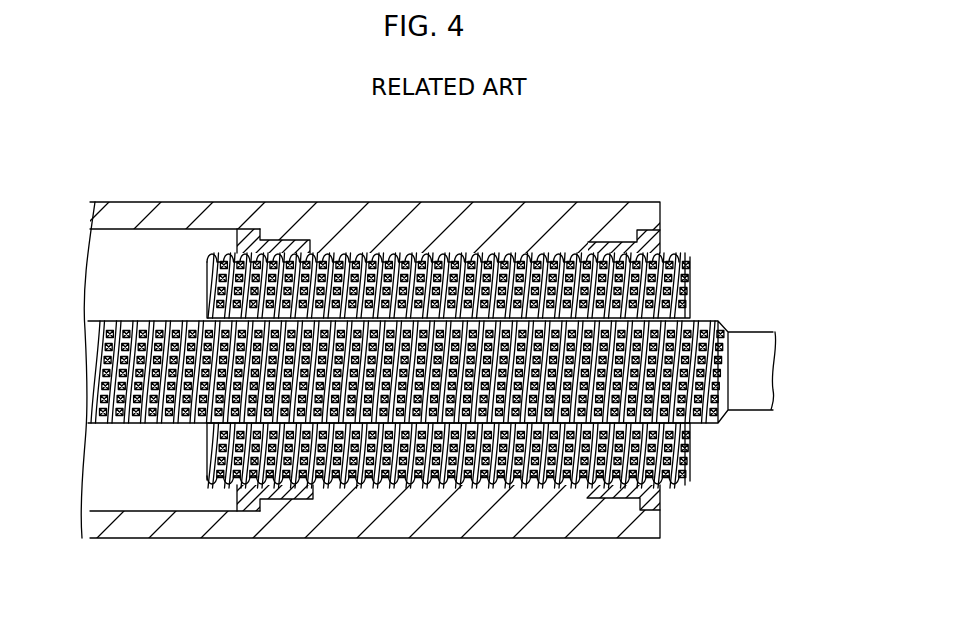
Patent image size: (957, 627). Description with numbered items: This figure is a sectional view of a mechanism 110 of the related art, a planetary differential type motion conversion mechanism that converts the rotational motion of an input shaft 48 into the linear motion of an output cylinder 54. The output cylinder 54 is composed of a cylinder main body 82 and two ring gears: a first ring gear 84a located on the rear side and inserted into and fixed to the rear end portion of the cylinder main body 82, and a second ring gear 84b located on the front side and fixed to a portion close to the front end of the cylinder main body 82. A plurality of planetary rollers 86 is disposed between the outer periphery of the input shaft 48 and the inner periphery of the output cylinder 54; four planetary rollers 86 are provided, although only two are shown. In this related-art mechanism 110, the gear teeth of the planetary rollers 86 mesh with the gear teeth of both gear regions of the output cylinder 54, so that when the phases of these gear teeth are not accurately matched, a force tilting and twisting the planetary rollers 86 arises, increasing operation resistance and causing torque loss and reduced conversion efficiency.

The mechanism of the related art 110 is at (746, 146).
The output cylinder 54 is at (412, 186).
The cylinder main body 82 is at (487, 213).
The first ring gear 84a is at (613, 248).
The second ring gear 84b is at (275, 251).
The planetary rollers 86 is at (345, 258).
The input shaft 48 is at (748, 405).